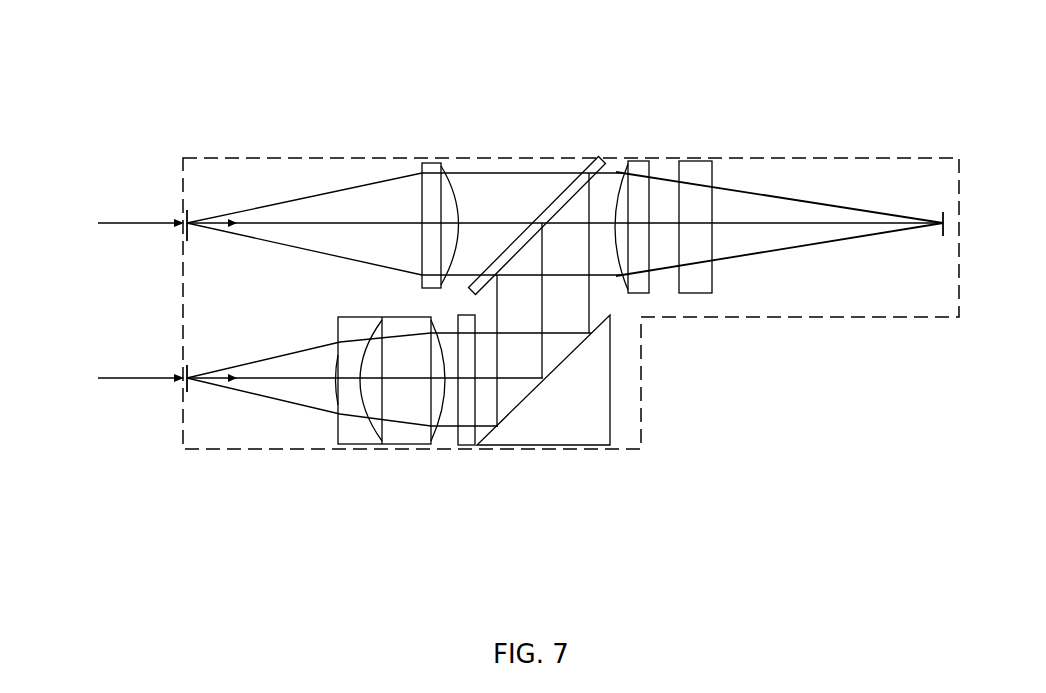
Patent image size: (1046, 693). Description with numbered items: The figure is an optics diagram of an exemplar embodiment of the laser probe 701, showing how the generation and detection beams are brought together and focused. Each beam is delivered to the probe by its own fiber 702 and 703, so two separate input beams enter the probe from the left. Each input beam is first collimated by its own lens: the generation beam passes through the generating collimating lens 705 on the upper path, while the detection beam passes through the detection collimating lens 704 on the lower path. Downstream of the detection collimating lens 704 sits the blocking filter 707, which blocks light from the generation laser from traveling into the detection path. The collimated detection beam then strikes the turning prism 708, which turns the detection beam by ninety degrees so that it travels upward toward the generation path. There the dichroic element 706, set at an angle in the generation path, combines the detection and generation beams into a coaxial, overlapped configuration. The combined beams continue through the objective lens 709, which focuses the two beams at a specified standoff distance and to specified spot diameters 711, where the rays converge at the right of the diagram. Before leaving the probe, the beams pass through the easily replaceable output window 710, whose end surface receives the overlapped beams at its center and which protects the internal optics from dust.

The probe 701 is at (319, 119).
The fiber 702 is at (140, 224).
The fiber 703 is at (132, 376).
The detection collimating lens 704 is at (358, 442).
The generating collimating lens 705 is at (422, 158).
The dichroic element 706 is at (566, 186).
The blocking filter 707 is at (456, 447).
The turning prism 708 is at (597, 443).
The objective lens 709 is at (640, 158).
The output window 710 is at (697, 158).
The spot diameters 711 is at (940, 210).